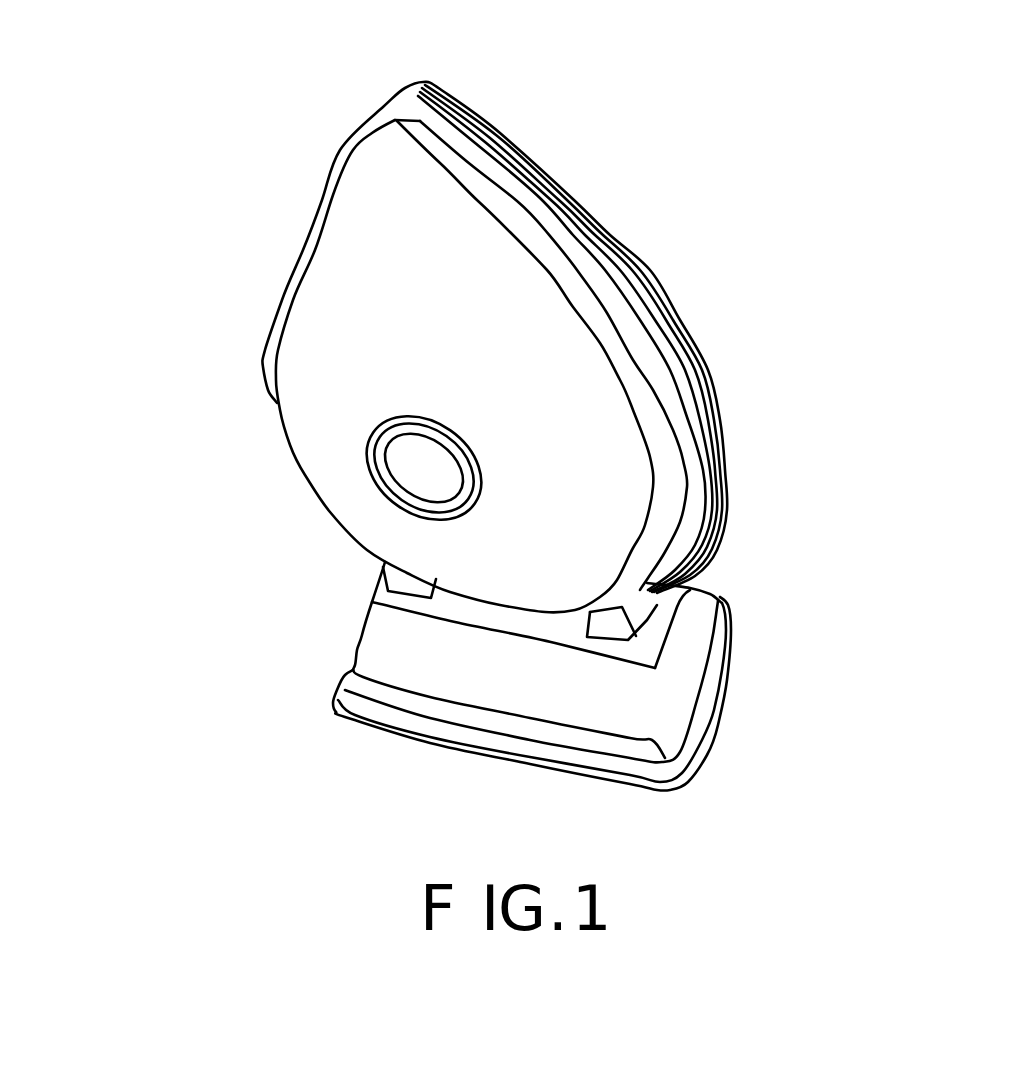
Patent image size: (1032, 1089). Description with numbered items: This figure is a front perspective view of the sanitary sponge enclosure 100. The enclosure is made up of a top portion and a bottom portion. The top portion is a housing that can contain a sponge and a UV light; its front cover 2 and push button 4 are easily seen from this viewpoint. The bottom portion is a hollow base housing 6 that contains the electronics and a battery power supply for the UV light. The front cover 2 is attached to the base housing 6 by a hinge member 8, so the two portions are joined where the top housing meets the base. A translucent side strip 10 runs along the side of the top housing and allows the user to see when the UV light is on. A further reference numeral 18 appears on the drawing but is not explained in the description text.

The device 100 is at (335, 23).
The front face 2 is at (493, 315).
The aperture 4 is at (428, 477).
The base 6 is at (678, 657).
The support pad 8 is at (640, 592).
The outer rim 10 is at (513, 142).
The intermediate rim 18 is at (565, 187).